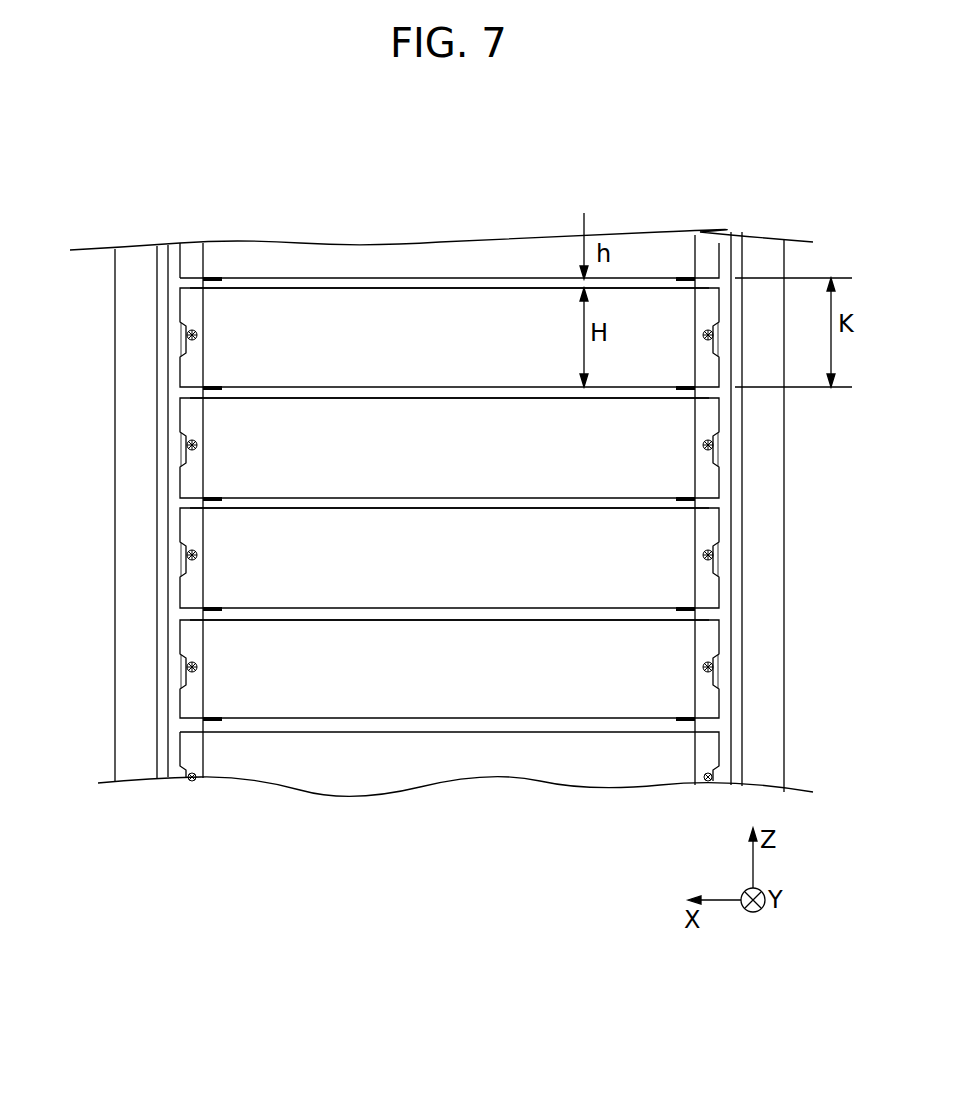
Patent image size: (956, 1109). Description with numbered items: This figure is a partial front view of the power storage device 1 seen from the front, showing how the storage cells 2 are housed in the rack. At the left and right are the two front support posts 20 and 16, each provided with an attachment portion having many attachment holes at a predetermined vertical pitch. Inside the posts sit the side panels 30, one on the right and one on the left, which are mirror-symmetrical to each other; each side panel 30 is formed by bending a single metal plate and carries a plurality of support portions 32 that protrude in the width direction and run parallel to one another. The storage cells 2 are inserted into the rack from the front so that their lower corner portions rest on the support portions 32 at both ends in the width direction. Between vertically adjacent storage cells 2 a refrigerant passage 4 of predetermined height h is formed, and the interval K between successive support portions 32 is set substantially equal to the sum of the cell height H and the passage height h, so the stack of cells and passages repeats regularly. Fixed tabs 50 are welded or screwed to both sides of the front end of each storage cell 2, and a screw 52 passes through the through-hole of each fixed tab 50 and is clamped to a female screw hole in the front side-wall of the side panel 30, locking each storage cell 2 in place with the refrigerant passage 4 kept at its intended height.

The power storage device 1 is at (468, 206).
The storage cell 2 is at (492, 350).
The refrigerant passage 4 is at (368, 283).
The support post 16 is at (784, 578).
The support post 20 is at (115, 607).
The side panel 30 is at (180, 505).
The support portion 32 is at (213, 393).
The fixed tab 50 is at (185, 482).
The screw 52 is at (192, 342).